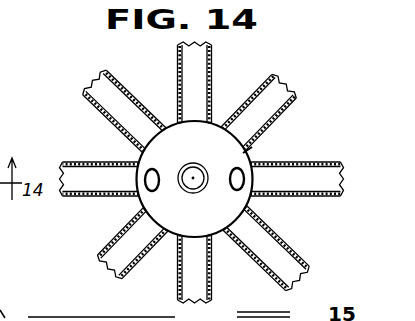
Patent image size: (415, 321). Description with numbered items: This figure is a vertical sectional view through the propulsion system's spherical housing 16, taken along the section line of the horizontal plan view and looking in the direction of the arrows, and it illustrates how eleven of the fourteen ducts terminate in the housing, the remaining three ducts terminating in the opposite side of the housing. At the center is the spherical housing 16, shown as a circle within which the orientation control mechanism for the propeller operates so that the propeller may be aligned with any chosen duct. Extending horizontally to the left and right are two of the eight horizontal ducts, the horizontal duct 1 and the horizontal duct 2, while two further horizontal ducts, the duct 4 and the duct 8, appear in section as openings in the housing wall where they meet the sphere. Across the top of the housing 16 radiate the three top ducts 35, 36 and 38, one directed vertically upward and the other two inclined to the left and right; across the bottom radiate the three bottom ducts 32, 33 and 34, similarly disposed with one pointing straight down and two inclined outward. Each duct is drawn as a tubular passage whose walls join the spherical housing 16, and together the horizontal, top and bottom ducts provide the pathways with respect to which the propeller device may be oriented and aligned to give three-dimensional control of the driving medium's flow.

The horizontal duct 1 is at (100, 183).
The horizontal duct 2 is at (308, 162).
The horizontal duct 4 is at (195, 191).
The horizontal duct 8 is at (137, 189).
The spherical housing 16 is at (256, 151).
The bottom duct 32 is at (128, 255).
The bottom duct 33 is at (214, 273).
The bottom duct 34 is at (262, 247).
The top duct 35 is at (115, 100).
The top duct 36 is at (199, 68).
The top duct 38 is at (274, 97).